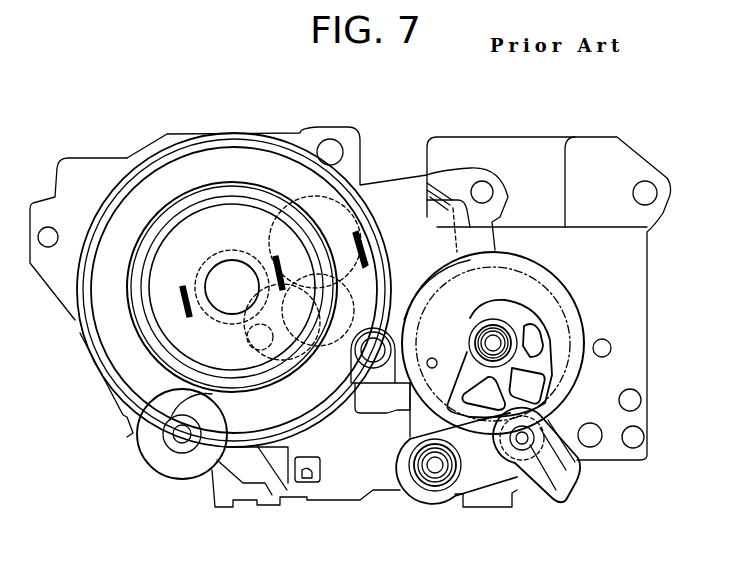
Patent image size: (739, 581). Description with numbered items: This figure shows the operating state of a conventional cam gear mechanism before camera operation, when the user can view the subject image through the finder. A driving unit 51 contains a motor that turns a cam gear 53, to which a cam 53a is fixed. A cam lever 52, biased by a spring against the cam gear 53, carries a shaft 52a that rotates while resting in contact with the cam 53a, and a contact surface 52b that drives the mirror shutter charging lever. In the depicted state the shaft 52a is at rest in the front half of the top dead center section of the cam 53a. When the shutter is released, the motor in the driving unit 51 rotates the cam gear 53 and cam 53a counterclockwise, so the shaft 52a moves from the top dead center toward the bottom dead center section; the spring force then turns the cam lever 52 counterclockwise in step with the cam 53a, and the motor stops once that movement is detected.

The driving unit 51 is at (238, 225).
The cam lever 52 is at (482, 477).
The shaft 52a is at (540, 418).
The contact surface 52b is at (555, 500).
The cam gear 53 is at (548, 310).
The cam 53a is at (555, 352).